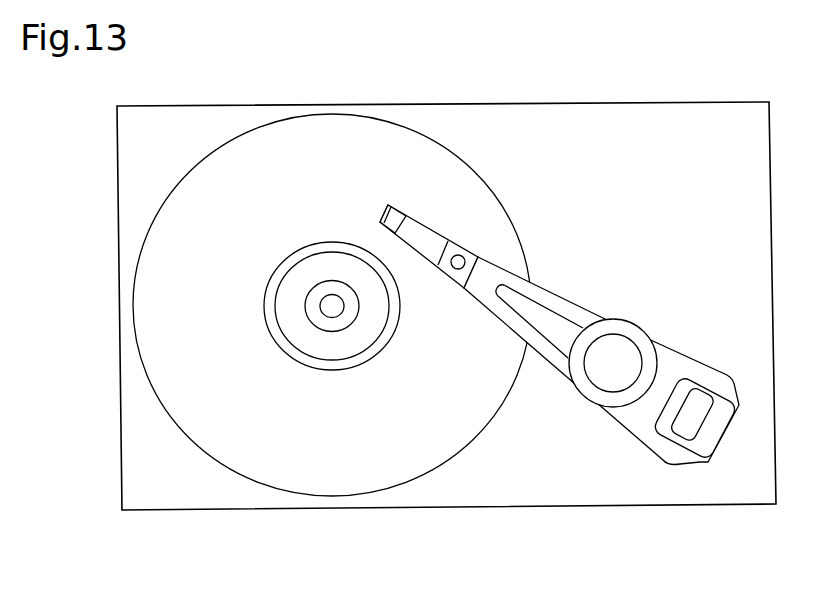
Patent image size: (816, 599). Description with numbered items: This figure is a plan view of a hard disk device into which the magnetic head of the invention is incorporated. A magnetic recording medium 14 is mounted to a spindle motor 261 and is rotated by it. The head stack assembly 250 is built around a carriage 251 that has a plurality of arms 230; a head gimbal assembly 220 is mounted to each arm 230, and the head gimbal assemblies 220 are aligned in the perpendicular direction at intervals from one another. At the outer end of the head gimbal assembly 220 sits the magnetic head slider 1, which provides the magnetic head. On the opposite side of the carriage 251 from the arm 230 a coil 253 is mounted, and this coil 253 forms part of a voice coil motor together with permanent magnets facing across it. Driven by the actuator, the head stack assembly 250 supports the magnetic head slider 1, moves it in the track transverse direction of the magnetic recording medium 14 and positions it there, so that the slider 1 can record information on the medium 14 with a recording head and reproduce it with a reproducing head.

The magnetic head slider 1 is at (399, 208).
The magnetic recording medium 14 is at (262, 486).
The head gimbal assembly 220 is at (433, 260).
The arm 230 is at (550, 362).
The head stack assembly 250 is at (616, 421).
The carriage 251 is at (621, 320).
The coil 253 is at (722, 434).
The spindle motor 261 is at (333, 317).